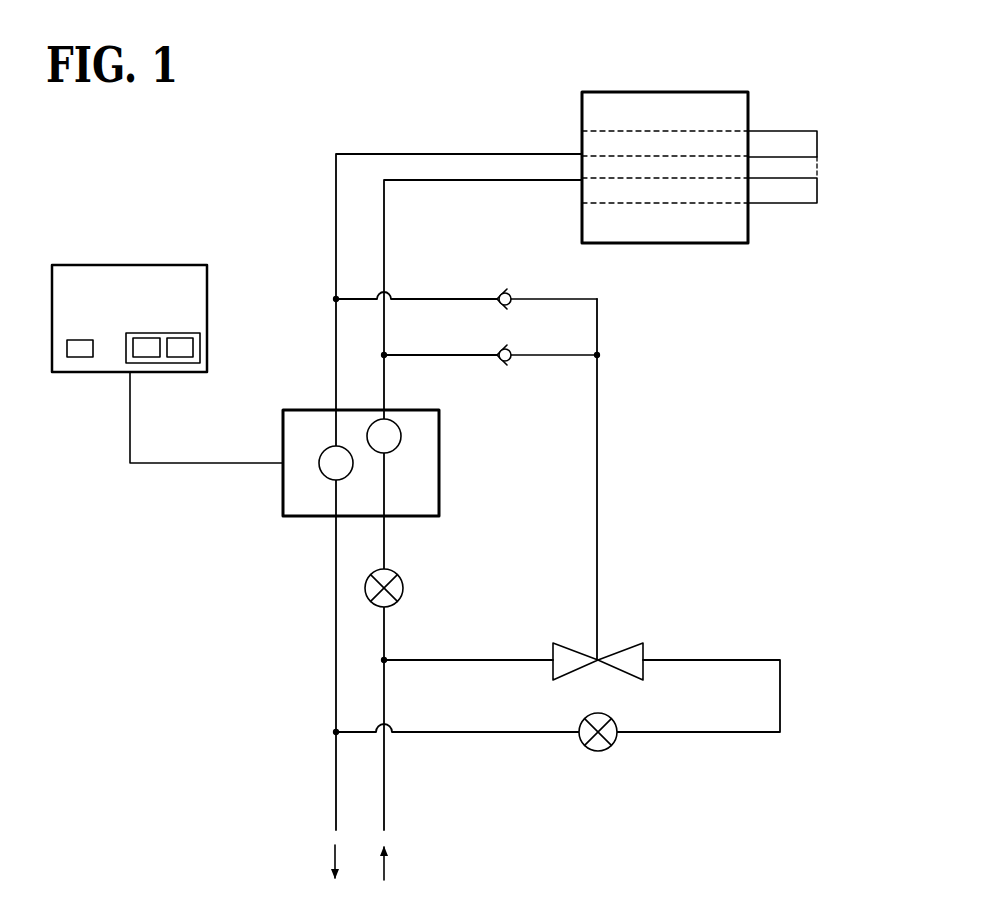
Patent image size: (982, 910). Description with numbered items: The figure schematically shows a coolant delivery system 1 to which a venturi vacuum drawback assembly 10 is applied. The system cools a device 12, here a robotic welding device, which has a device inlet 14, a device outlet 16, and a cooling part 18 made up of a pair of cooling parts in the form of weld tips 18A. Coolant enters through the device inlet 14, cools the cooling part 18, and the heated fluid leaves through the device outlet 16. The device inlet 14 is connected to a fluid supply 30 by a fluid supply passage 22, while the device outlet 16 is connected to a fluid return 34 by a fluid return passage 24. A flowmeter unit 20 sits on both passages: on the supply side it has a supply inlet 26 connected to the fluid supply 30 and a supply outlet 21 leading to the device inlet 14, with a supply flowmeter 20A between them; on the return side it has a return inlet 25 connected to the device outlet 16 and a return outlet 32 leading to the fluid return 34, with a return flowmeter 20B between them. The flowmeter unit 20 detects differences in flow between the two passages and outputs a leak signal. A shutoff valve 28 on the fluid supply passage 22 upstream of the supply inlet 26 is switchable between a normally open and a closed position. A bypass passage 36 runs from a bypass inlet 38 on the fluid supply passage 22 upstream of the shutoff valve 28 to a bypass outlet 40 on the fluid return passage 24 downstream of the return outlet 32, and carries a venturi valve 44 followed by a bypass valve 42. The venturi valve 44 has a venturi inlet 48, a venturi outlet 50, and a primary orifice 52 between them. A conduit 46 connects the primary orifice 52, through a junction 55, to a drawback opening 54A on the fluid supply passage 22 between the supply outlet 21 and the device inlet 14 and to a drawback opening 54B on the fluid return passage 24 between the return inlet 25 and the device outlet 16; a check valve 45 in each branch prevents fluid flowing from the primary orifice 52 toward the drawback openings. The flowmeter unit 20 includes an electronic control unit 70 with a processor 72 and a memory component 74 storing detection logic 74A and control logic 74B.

The coolant delivery system 1 is at (300, 60).
The venturi vacuum drawback assembly 10 is at (339, 140).
The device 12 is at (596, 80).
The device inlet 14 is at (580, 180).
The device outlet 16 is at (580, 154).
The cooling part 18 is at (738, 90).
The weld tips 18A is at (803, 131).
The flowmeter unit 20 is at (281, 438).
The supply flowmeter 20A is at (401, 430).
The return flowmeter 20B is at (353, 463).
The supply outlet 21 is at (385, 378).
The fluid supply passage 22 is at (389, 258).
The fluid return passage 24 is at (333, 202).
The return inlet 25 is at (335, 380).
The supply inlet 26 is at (386, 535).
The shutoff valve 28 is at (403, 582).
The fluid supply 30 is at (384, 876).
The return outlet 32 is at (335, 552).
The fluid return 34 is at (335, 875).
The bypass passage 36 is at (787, 651).
The bypass inlet 38 is at (386, 657).
The bypass outlet 40 is at (334, 733).
The bypass valve 42 is at (590, 747).
The venturi valve 44 is at (569, 637).
The check valve 45 is at (508, 290).
The conduit 46 is at (599, 460).
The venturi inlet 48 is at (551, 668).
The venturi outlet 50 is at (645, 665).
The primary orifice 52 is at (600, 655).
The drawback opening 54A is at (386, 353).
The drawback opening 54B is at (334, 298).
The junction 55 is at (600, 356).
The electronic control unit 70 is at (85, 265).
The processor 72 is at (67, 348).
The memory component 74 is at (180, 333).
The detection logic 74A is at (130, 350).
The control logic 74B is at (193, 347).